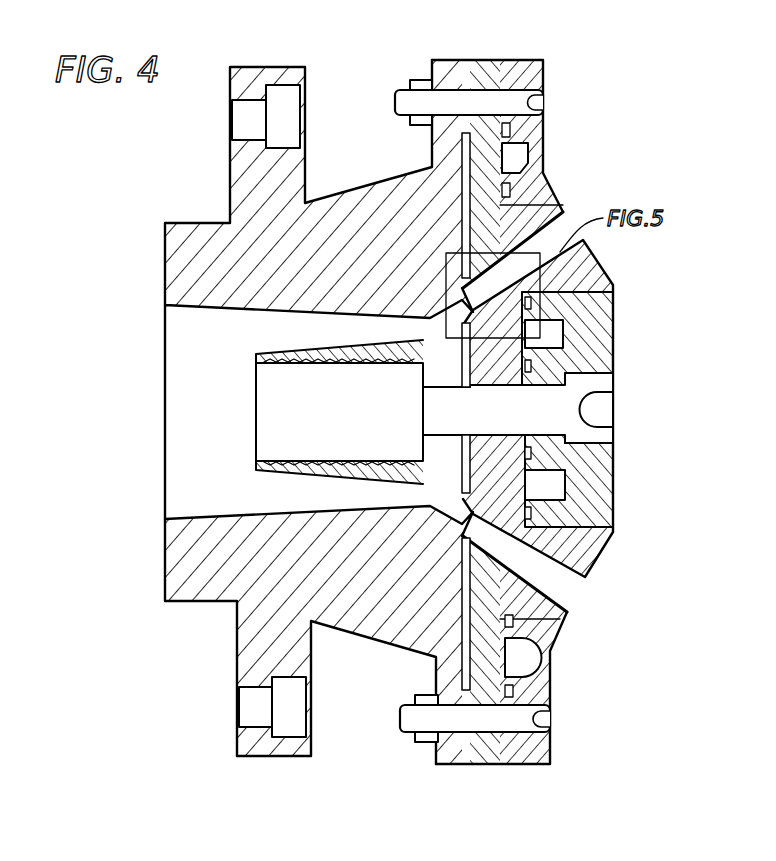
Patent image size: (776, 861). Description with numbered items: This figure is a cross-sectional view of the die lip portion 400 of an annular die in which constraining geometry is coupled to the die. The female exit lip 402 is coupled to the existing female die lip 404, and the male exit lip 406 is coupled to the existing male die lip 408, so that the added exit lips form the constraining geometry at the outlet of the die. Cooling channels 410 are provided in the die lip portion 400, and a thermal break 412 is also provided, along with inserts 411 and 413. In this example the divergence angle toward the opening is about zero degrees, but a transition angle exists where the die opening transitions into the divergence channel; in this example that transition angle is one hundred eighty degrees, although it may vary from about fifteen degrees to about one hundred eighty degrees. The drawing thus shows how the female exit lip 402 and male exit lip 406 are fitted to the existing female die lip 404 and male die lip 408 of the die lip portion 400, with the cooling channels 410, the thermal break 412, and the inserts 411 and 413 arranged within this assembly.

The die lip portion 400 is at (640, 94).
The female exit lip 402 is at (480, 68).
The female die lip 404 is at (202, 237).
The male exit lip 406 is at (588, 553).
The male die lip 408 is at (420, 418).
The cooling channels 410 is at (518, 157).
The insert 411 is at (540, 80).
The thermal break 412 is at (463, 205).
The insert 413 is at (610, 475).